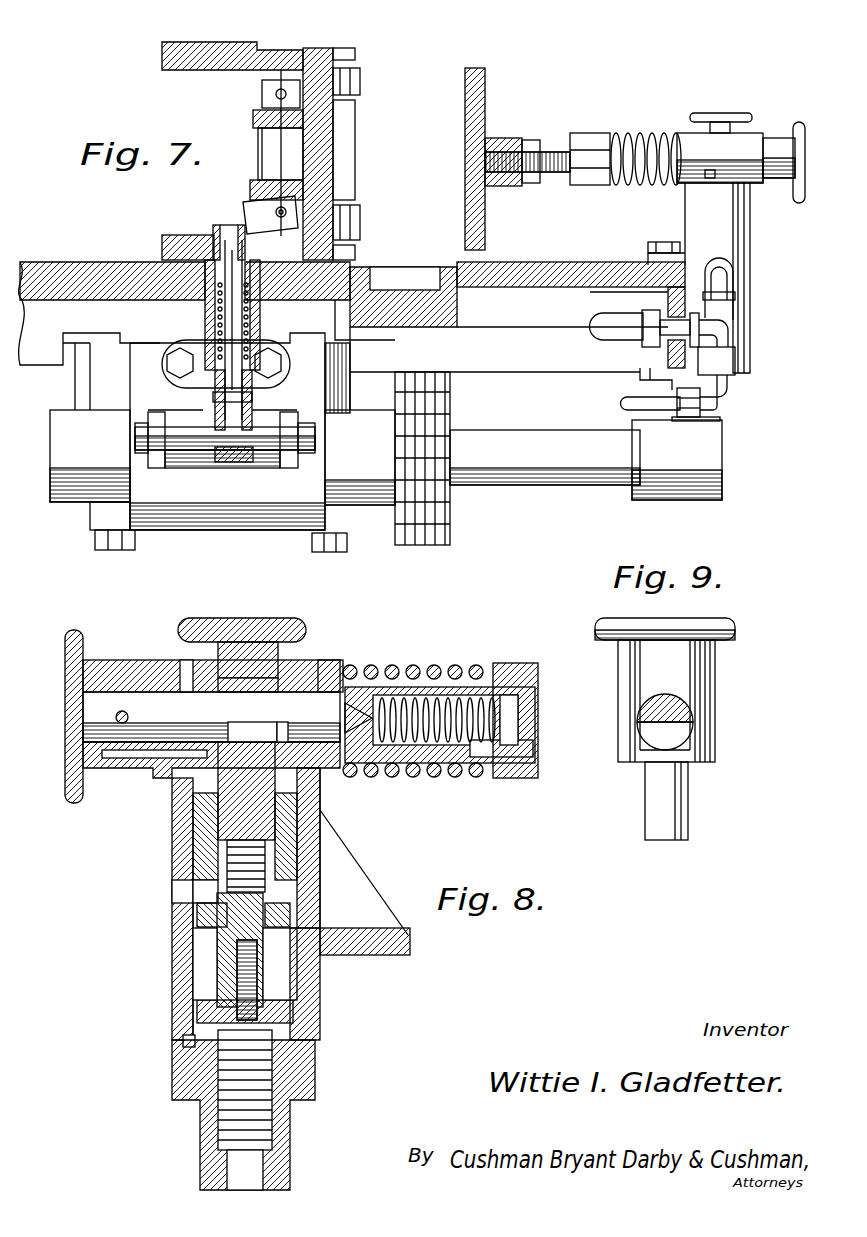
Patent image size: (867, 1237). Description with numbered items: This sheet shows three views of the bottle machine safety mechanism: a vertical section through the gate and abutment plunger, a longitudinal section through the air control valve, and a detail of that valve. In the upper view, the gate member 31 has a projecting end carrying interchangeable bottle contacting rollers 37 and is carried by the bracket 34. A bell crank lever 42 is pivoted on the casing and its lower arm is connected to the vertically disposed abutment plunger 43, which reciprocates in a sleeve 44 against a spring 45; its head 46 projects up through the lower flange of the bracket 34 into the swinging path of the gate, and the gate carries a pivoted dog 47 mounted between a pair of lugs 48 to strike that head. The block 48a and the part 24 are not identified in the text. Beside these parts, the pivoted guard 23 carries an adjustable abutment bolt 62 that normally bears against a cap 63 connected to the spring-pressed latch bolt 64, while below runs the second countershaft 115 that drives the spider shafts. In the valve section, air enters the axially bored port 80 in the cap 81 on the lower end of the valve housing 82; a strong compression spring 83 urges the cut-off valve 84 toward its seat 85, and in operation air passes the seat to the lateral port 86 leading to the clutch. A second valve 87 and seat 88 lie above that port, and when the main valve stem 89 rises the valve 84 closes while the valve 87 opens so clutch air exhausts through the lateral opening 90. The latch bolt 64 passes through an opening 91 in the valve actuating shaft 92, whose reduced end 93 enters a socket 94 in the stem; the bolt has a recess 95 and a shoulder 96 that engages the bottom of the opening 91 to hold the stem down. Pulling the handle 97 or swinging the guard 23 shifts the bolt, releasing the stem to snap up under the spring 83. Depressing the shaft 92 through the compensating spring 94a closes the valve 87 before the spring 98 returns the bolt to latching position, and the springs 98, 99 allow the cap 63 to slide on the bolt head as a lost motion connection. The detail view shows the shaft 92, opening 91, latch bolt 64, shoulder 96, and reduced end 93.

In FIG. 7, the bracket 34 is at (165, 56).
In FIG. 7, the bottle contacting rollers 37 is at (360, 80).
In FIG. 7, the block 48a is at (262, 95).
In FIG. 7, the gate member 31 is at (268, 160).
In FIG. 7, the lugs 48 is at (278, 200).
In FIG. 7, the pivoted dog 47 is at (250, 212).
In FIG. 7, the head 46 is at (215, 230).
In FIG. 7, the spring 45 is at (205, 290).
In FIG. 7, the sleeve 44 is at (205, 320).
In FIG. 7, the abutment plunger 43 is at (215, 365).
In FIG. 7, the bell crank lever 42 is at (205, 452).
In FIG. 7, the second countershaft 115 is at (530, 455).
In FIG. 7, the pivoted guard 23 is at (485, 210).
In FIG. 7, the cap 63 is at (595, 185).
In FIG. 8, the cap 63 is at (530, 665).
In FIG. 7, the adjustable abutment bolt 62 is at (585, 140).
In FIG. 7, the handle block 24 is at (720, 148).
In FIG. 8, the valve actuating shaft 92 is at (270, 635).
In FIG. 9, the valve actuating shaft 92 is at (680, 660).
In FIG. 8, the opening 91 is at (236, 685).
In FIG. 9, the opening 91 is at (685, 690).
In FIG. 8, the handle 97 is at (75, 775).
In FIG. 8, the shoulder 96 is at (232, 722).
In FIG. 9, the shoulder 96 is at (680, 735).
In FIG. 8, the spring-pressed latch bolt 64 is at (330, 690).
In FIG. 9, the spring-pressed latch bolt 64 is at (650, 712).
In FIG. 8, the spring 98 is at (415, 665).
In FIG. 8, the spring 99 is at (510, 738).
In FIG. 8, the recess 95 is at (193, 795).
In FIG. 8, the compensating spring 94a is at (200, 830).
In FIG. 8, the socket 94 is at (270, 850).
In FIG. 8, the reduced end 93 is at (322, 810).
In FIG. 9, the reduced end 93 is at (668, 806).
In FIG. 8, the second valve 87 is at (360, 870).
In FIG. 8, the seat 88 is at (310, 905).
In FIG. 8, the lateral opening 90 is at (180, 892).
In FIG. 8, the main valve stem 89 is at (210, 915).
In FIG. 8, the lateral port 86 is at (200, 950).
In FIG. 8, the seat 85 is at (290, 985).
In FIG. 8, the cut-off valve 84 is at (300, 1010).
In FIG. 8, the valve housing 82 is at (172, 993).
In FIG. 8, the cap 81 is at (172, 1082).
In FIG. 8, the compression spring 83 is at (290, 1112).
In FIG. 8, the axially bored port 80 is at (230, 1168).